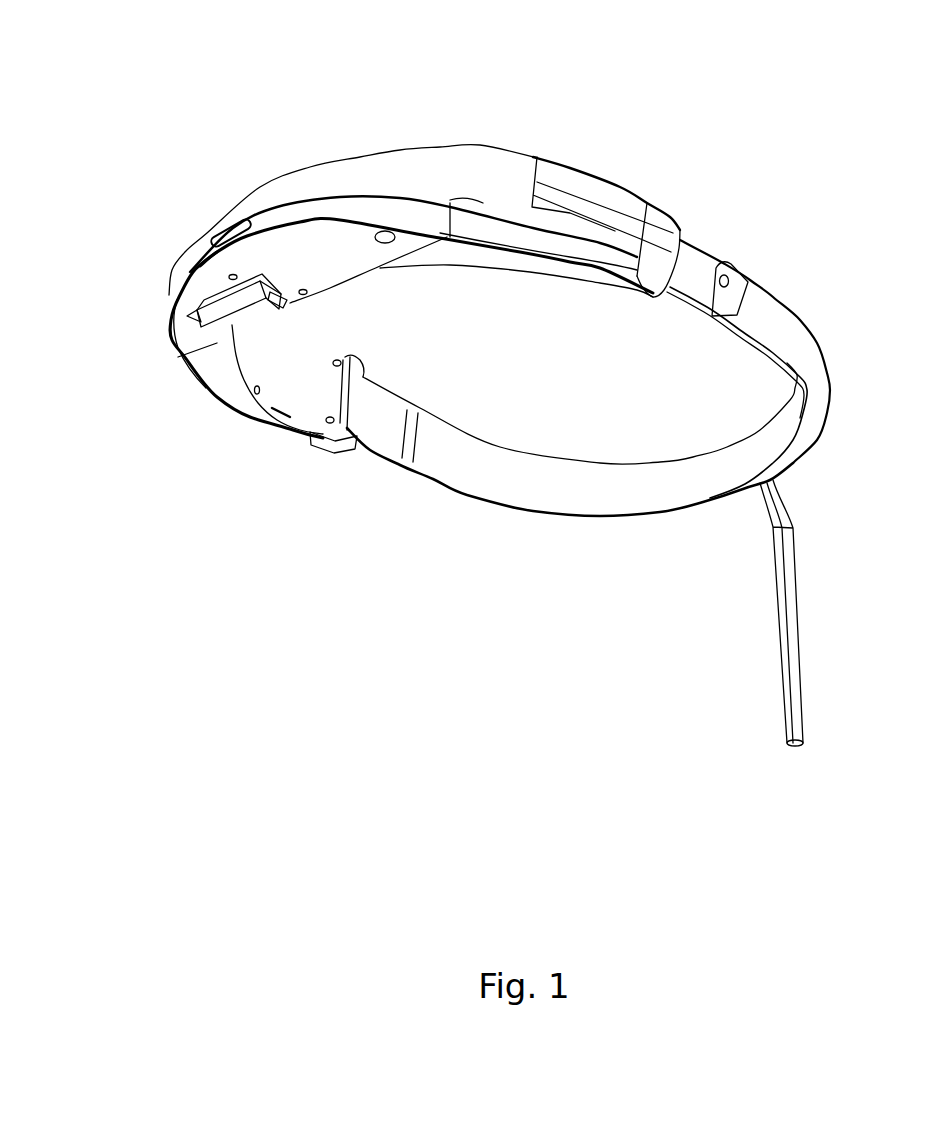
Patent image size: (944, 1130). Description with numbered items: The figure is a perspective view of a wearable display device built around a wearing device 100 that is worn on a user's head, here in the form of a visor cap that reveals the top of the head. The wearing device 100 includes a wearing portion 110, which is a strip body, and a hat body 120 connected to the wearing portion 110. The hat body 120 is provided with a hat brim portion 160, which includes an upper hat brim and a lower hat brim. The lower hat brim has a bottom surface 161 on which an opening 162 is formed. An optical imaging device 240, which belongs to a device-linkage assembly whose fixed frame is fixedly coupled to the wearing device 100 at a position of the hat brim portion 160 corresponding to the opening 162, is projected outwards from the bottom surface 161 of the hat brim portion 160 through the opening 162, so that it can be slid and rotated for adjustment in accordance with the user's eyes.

The wearing device 100 is at (357, 100).
The wearing portion 110 is at (692, 257).
The hat body 120 is at (380, 173).
The hat brim portion 160 is at (173, 285).
The bottom surface 161 is at (170, 336).
The opening 162 is at (283, 282).
The optical imaging device 240 is at (224, 355).